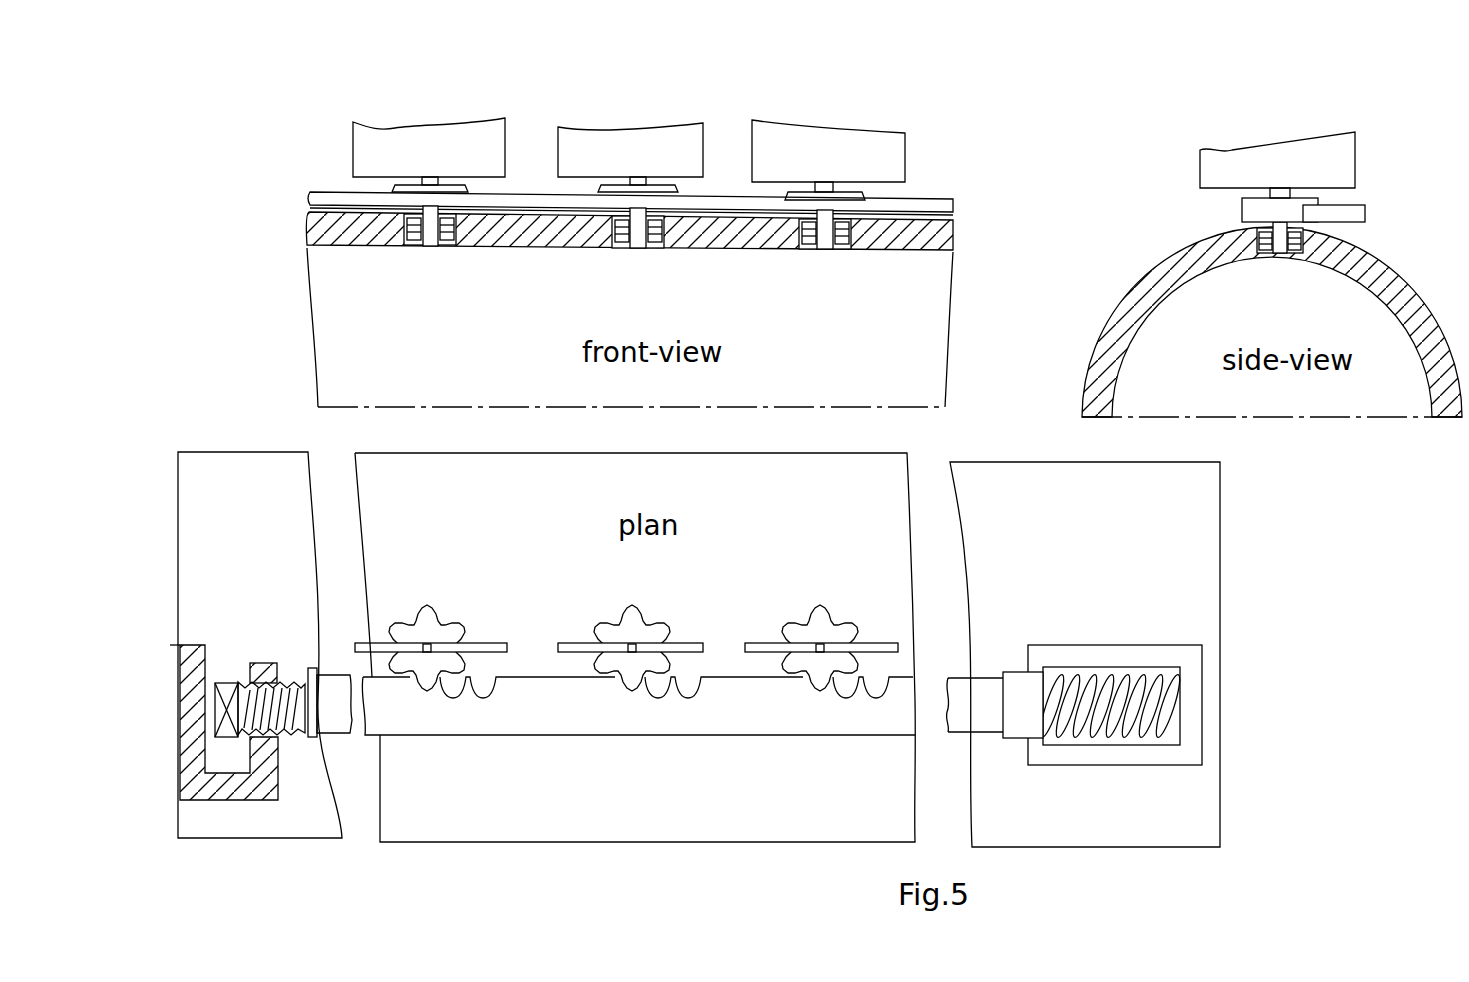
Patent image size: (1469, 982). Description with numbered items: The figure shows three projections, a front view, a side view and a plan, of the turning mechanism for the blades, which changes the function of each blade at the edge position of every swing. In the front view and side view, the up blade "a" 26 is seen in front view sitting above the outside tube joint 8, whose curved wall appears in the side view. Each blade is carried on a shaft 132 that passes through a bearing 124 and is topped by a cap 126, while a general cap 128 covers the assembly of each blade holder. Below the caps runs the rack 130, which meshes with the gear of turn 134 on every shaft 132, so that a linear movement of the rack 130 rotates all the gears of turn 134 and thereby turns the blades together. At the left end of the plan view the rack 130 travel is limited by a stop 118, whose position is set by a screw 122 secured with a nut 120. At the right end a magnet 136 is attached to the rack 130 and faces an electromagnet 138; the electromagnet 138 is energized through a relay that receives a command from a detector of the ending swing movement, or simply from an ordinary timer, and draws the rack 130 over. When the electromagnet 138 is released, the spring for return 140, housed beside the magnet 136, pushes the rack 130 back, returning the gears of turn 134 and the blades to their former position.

The outside tube joint 8 is at (1150, 272).
The up blade "a" (front-view) 26 is at (1225, 160).
The stop 118 is at (196, 805).
The nut 120 is at (262, 805).
The screw 122 is at (290, 735).
The bearing 124 is at (414, 220).
The cap 126 is at (452, 207).
The general cap 128 is at (642, 122).
The rack 130 is at (719, 196).
The shaft 132 is at (823, 186).
The gear of turn 134 is at (855, 194).
The magnet 136 is at (1015, 740).
The electromagnet 138 is at (1108, 755).
The spring for return 140 is at (1153, 745).